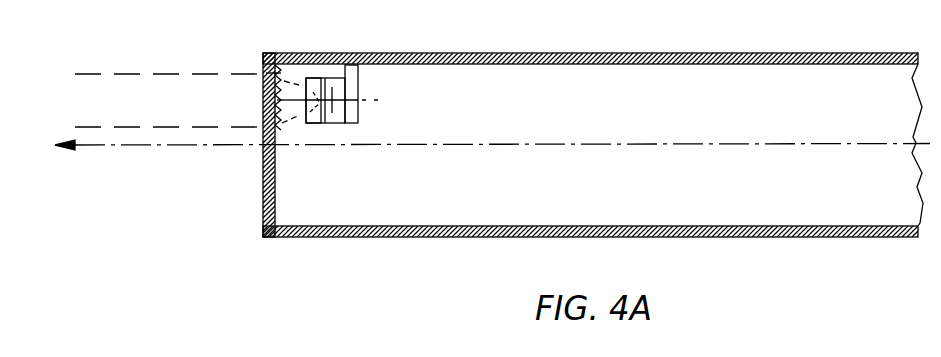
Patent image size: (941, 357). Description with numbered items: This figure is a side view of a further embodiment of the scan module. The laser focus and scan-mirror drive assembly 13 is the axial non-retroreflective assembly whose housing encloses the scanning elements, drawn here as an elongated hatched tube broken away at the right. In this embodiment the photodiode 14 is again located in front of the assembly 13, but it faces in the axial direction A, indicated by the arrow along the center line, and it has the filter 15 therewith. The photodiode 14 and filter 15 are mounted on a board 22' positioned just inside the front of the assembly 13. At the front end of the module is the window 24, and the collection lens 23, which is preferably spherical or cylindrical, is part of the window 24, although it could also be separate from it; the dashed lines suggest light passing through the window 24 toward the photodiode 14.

The laser focus and scan-mirror drive assembly 13 is at (604, 75).
The photodiode 14 is at (333, 77).
The filter 15 is at (307, 77).
The board 22' is at (377, 70).
The collection lens 23 is at (266, 92).
The window 24 is at (264, 190).
The axial direction A is at (137, 148).